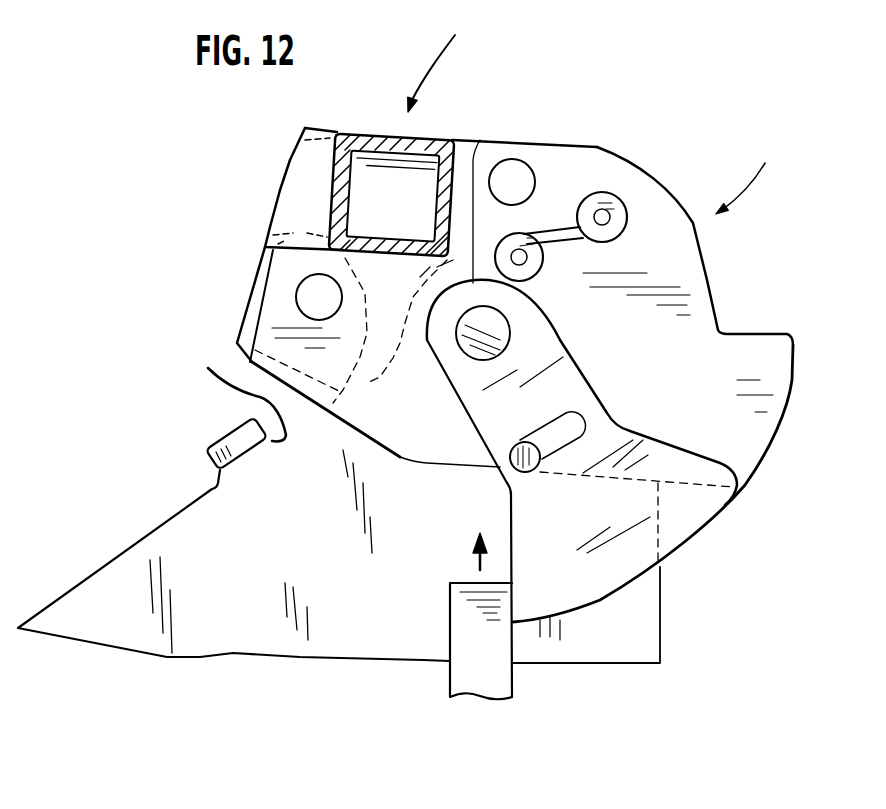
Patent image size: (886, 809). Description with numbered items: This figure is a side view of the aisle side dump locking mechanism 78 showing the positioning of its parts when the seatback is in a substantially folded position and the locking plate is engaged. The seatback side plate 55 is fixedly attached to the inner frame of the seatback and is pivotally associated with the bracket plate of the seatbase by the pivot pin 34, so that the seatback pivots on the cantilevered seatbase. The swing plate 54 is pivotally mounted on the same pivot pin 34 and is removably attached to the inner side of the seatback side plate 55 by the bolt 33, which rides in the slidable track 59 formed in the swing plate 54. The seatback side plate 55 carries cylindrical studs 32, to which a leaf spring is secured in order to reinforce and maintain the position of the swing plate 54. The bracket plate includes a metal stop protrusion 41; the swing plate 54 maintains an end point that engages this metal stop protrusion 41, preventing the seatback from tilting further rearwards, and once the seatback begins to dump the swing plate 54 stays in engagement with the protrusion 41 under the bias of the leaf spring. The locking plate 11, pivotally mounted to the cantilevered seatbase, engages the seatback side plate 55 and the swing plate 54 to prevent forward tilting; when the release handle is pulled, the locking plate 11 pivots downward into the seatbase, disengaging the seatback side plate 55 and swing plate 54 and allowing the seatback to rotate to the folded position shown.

The locking plate 11 is at (517, 682).
The cylindrical studs 32 is at (601, 195).
The bolt 33 is at (357, 372).
The pivot pin 34 is at (480, 140).
The metal stop protrusion 41 is at (213, 460).
The swing plate 54 is at (209, 369).
The seatback side plate 55 is at (673, 188).
The slidable track 59 is at (555, 455).
The aisle side dump locking mechanism 78 is at (747, 175).